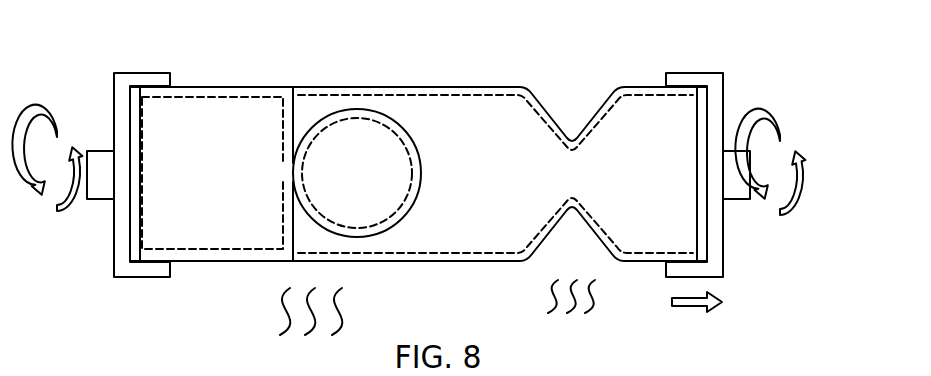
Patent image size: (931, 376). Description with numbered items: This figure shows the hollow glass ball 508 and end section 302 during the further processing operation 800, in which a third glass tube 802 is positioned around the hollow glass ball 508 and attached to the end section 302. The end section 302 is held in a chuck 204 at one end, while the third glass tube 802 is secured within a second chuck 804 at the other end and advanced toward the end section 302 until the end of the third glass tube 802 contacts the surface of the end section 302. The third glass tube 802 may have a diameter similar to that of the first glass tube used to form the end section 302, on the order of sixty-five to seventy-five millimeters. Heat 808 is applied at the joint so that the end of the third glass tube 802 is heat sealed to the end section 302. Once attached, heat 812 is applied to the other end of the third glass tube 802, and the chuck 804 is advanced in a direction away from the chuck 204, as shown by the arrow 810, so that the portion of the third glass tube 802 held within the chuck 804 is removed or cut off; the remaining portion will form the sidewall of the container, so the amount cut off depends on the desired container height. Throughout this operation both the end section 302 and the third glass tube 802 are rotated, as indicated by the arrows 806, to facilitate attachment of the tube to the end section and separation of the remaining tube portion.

The processing operation 800 is at (737, 38).
The chuck 204 is at (143, 72).
The end section 302 is at (222, 86).
The hollow glass ball 508 is at (358, 108).
The third glass tube 802 is at (478, 86).
The chuck 804 is at (696, 72).
The arrows 806 is at (58, 129).
The heat 808 is at (344, 309).
The arrow 810 is at (694, 313).
The heat 812 is at (598, 291).